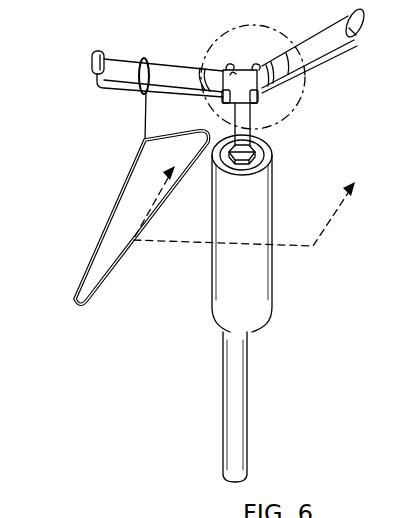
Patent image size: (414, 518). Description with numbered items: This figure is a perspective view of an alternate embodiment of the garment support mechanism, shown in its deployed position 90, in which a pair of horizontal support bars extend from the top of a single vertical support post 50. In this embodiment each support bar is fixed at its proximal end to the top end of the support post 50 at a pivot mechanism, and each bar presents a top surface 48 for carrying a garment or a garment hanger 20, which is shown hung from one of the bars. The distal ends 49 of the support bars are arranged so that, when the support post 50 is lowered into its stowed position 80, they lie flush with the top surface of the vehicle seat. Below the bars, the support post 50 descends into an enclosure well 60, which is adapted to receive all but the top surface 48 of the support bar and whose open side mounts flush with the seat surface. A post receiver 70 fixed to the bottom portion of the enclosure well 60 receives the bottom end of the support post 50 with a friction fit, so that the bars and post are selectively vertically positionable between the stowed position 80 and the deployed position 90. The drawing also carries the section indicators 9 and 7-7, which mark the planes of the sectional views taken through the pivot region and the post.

The deployed position 90 is at (98, 31).
The top surface 48 is at (188, 60).
The distal ends 49 is at (93, 60).
The garment hanger 20 is at (92, 255).
The support post 50 is at (267, 134).
The enclosure well 60 is at (218, 270).
The post receiver 70 is at (233, 362).
The section line 9- 9 is at (252, 196).
The section circle 7-7 is at (311, 134).
The stowed position 80 is at (113, 517).